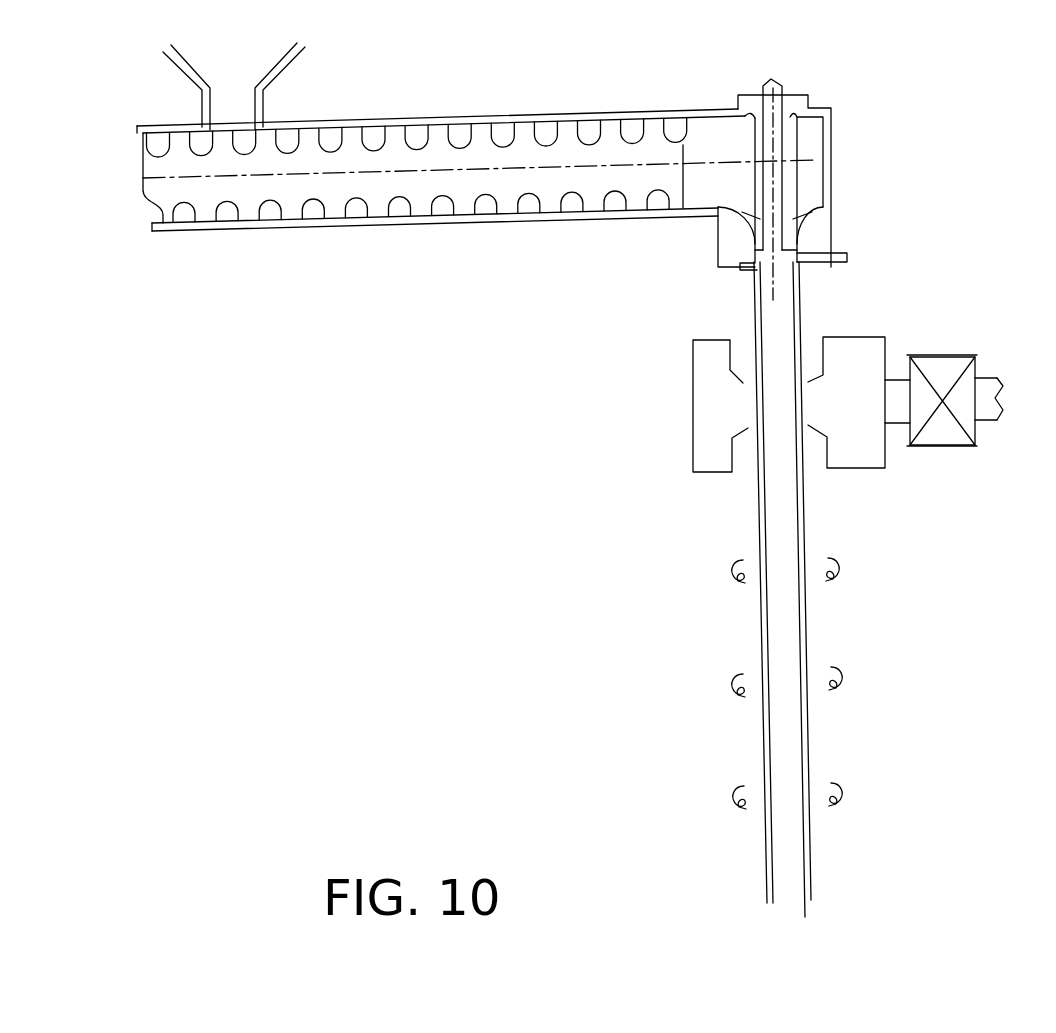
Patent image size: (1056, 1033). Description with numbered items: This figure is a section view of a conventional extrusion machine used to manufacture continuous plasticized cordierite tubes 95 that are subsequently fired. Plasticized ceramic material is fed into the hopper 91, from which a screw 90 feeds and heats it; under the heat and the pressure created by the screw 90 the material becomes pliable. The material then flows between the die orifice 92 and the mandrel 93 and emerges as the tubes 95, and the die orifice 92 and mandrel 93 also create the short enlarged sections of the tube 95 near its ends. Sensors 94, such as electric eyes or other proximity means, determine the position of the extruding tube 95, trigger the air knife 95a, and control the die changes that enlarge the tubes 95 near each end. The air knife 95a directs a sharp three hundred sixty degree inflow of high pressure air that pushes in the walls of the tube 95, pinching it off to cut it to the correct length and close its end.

The screw 90 is at (143, 167).
The hopper 91 is at (178, 64).
The die orifice 92 is at (800, 233).
The mandrel 93 is at (790, 182).
The sensors 94 is at (840, 673).
The tubes 95 is at (803, 537).
The air knife 95a is at (860, 337).